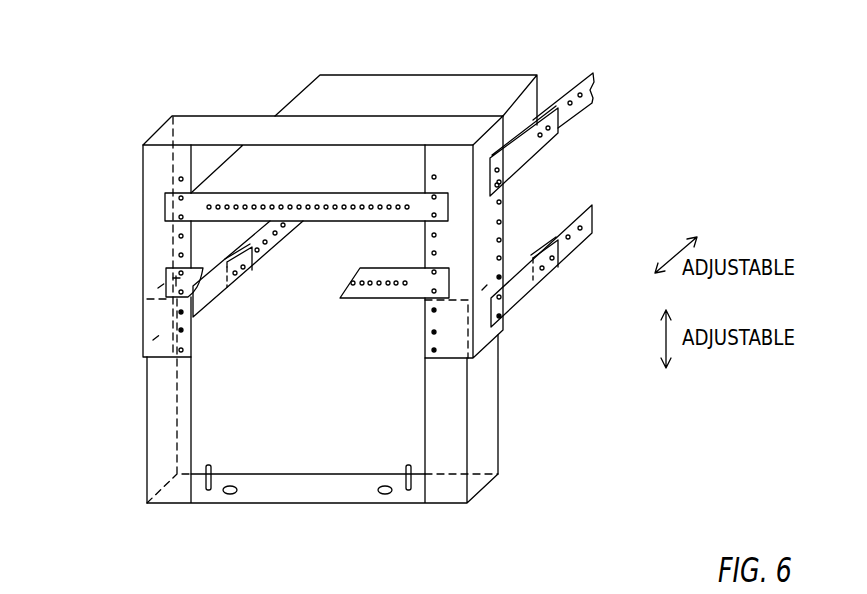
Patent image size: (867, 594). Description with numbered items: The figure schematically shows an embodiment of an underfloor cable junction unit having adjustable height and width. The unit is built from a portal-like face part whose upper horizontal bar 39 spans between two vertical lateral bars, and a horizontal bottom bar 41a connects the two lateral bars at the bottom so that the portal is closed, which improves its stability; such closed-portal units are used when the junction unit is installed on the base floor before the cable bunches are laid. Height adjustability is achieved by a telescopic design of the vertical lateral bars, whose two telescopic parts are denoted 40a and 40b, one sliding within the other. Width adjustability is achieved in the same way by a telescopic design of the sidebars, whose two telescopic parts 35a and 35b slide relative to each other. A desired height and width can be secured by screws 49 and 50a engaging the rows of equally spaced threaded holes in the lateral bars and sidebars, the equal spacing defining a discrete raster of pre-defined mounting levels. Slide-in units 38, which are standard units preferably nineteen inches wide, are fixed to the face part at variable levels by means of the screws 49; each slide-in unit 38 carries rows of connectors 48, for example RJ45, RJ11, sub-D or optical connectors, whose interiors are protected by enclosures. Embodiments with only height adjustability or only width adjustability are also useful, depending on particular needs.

The upper horizontal bar 39 is at (221, 128).
The slide-in unit 38 is at (451, 97).
The telescopic part of vertical lateral bar 40a is at (167, 232).
The telescopic part of vertical lateral bar 40b is at (167, 400).
The horizontal bottom bar 41a is at (293, 493).
The connector 48 is at (368, 280).
The screw 49 is at (178, 329).
The telescopic part of sidebar 35a is at (213, 301).
The telescopic part of sidebar 35b is at (243, 271).
The screw 50a is at (552, 258).